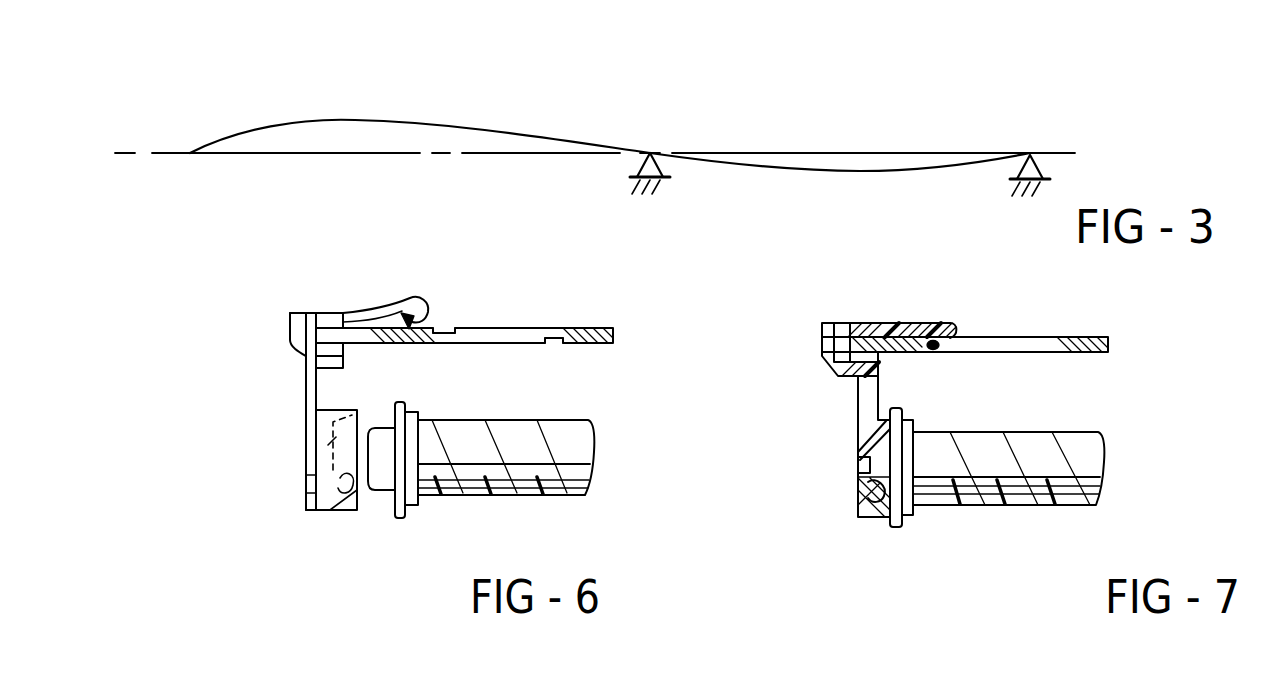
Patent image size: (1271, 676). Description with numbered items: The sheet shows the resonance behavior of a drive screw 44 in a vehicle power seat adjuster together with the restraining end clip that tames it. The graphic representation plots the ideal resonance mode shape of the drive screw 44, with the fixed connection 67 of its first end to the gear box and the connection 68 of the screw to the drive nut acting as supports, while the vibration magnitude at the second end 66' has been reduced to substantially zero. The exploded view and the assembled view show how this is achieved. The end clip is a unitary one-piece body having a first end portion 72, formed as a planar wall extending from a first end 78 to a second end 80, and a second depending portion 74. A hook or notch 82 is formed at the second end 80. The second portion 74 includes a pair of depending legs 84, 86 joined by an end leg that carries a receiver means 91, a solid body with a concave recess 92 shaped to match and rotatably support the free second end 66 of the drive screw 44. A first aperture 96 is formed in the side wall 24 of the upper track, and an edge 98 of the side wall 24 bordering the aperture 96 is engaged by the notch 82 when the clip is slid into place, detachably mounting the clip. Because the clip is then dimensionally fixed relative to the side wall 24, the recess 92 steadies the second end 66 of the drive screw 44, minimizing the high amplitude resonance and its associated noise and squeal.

In FIG. 3, the second end of the drive screw 66' is at (607, 119).
In FIG. 3, the connection of the drive screw to the drive nut 68 is at (650, 152).
In FIG. 3, the fixed connection of the first end of the drive screw 67 is at (1032, 153).
In FIG. 6, the first end portion 72 is at (372, 262).
In FIG. 7, the first end portion 72 is at (905, 277).
In FIG. 6, the first end 78 is at (290, 312).
In FIG. 7, the first end 78 is at (822, 323).
In FIG. 6, the second end 80 is at (418, 301).
In FIG. 7, the second end 80 is at (955, 323).
In FIG. 6, the notch 82 is at (410, 332).
In FIG. 7, the notch 82 is at (940, 350).
In FIG. 6, the side wall 24 is at (580, 327).
In FIG. 7, the side wall 24 is at (1108, 337).
In FIG. 6, the edge 98 is at (455, 329).
In FIG. 6, the first aperture 96 is at (548, 344).
In FIG. 6, the second depending portion 74 is at (268, 438).
In FIG. 7, the second depending portion 74 is at (841, 440).
In FIG. 6, the depending leg 84 is at (306, 446).
In FIG. 6, the receiver means 91 is at (338, 410).
In FIG. 7, the receiver means 91 is at (889, 422).
In FIG. 6, the concave recess 92 is at (332, 512).
In FIG. 7, the concave recess 92 is at (885, 505).
In FIG. 7, the depending leg 86 is at (866, 434).
In FIG. 6, the second end of the drive screw 66 is at (394, 501).
In FIG. 7, the second end of the drive screw 66 is at (855, 495).
In FIG. 6, the drive screw 44 is at (510, 496).
In FIG. 7, the drive screw 44 is at (1025, 500).